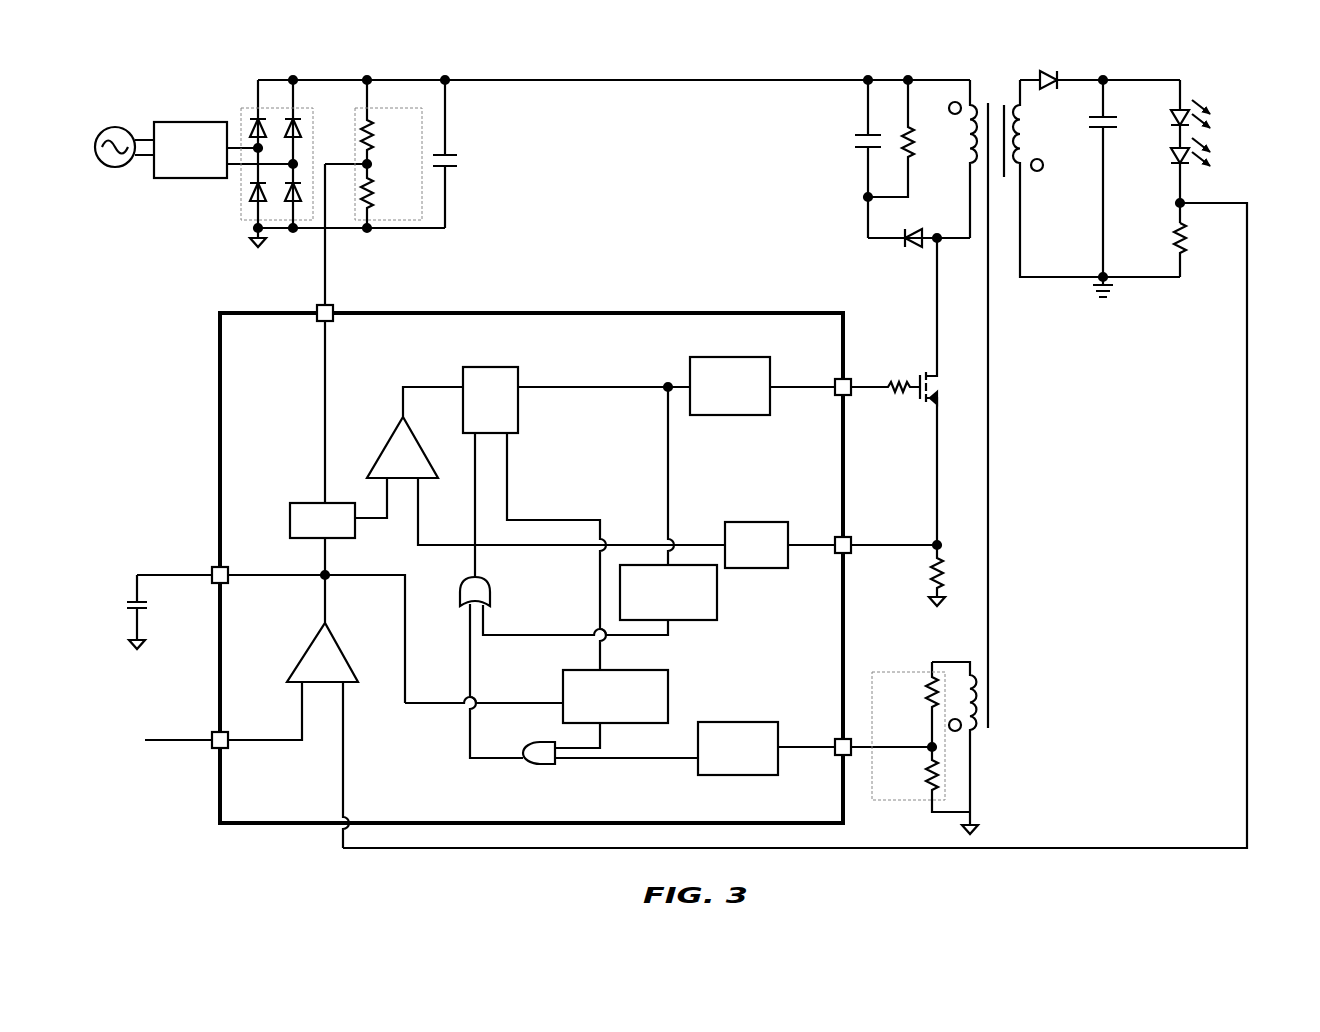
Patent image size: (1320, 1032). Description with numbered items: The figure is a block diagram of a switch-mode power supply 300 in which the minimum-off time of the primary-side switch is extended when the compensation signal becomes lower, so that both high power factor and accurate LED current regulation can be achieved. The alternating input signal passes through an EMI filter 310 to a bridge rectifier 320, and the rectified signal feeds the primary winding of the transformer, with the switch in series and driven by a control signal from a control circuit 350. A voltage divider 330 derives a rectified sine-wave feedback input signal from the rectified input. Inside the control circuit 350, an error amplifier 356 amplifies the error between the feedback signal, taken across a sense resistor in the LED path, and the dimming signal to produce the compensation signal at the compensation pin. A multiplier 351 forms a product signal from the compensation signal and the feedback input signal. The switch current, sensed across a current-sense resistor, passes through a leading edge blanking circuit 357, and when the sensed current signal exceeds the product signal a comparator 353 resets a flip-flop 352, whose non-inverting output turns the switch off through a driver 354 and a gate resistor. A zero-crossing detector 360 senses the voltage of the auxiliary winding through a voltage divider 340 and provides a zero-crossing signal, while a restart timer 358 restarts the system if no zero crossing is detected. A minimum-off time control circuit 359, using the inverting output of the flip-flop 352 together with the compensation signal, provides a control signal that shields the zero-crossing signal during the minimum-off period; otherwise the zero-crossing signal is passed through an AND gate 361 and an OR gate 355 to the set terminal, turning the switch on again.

The switch-mode power supply 300 is at (1253, 140).
The EMI filter 310 is at (197, 180).
The bridge rectifier 320 is at (238, 110).
The voltage divider 330 is at (352, 112).
The voltage divider 340 is at (905, 672).
The control circuit 350 is at (212, 428).
The multiplier 351 is at (290, 515).
The flip-flop 352 is at (466, 366).
The comparator 353 is at (436, 448).
The driver 354 is at (692, 357).
The OR gate 355 is at (492, 592).
The error amplifier 356 is at (360, 682).
The leading edge blanking circuit 357 is at (765, 520).
The restart timer 358 is at (717, 588).
The minimum-off time control circuit 359 is at (536, 710).
The zero-crossing detector 360 is at (705, 778).
The AND gate 361 is at (535, 764).